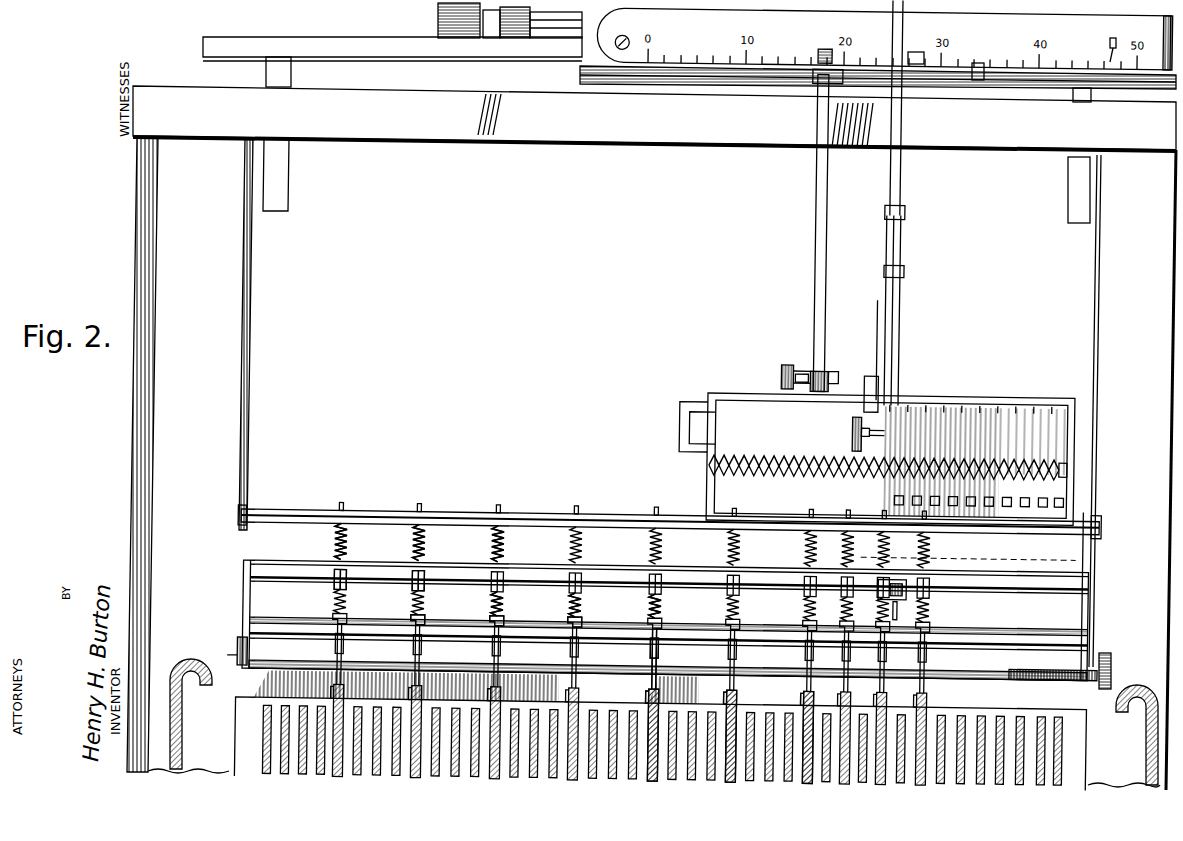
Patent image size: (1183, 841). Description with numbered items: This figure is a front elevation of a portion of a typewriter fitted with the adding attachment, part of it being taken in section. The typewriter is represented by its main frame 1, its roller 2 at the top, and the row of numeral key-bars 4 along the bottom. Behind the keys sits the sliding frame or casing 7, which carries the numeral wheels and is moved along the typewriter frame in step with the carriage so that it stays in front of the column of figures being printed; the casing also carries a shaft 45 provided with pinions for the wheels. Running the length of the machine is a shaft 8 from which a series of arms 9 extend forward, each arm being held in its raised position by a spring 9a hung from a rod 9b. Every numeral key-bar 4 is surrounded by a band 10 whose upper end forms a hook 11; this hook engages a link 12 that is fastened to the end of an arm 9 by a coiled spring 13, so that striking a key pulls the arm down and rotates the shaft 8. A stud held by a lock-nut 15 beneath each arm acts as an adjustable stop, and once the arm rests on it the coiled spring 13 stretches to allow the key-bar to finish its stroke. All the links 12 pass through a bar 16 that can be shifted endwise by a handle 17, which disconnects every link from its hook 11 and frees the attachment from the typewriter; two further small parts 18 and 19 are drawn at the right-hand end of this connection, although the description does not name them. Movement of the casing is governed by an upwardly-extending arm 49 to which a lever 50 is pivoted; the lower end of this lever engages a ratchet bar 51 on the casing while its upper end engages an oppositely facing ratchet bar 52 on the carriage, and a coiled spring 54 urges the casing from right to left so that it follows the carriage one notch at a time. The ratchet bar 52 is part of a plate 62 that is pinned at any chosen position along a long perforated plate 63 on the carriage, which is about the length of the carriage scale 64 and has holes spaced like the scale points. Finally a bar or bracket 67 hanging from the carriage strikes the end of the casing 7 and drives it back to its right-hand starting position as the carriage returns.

The main frame 1 is at (250, 373).
The roller 2 is at (580, 72).
The key-bars 4 is at (262, 742).
The frame or casing 7 is at (890, 499).
The shaft 8 is at (612, 573).
The arms 9 is at (424, 570).
The spring 9a is at (505, 545).
The rod 9b is at (543, 509).
The band 10 is at (740, 693).
The hook 11 is at (815, 684).
The link 12 is at (582, 661).
The coiled spring 13 is at (662, 603).
The lock-nut 15 is at (583, 621).
The bar 16 is at (1012, 665).
The handle 17 is at (1110, 660).
The bracket 18 is at (905, 590).
The rod 19 is at (905, 608).
The shaft 45 is at (862, 438).
The upwardly-extending arm 49 is at (902, 275).
The lever 50 is at (900, 180).
The ratchet bar 51 is at (988, 401).
The ratchet bar 52 is at (978, 80).
The coiled spring 54 is at (786, 456).
The plate 62 is at (924, 64).
The long plate 63 is at (1083, 102).
The scale 64 is at (1122, 41).
The bar or bracket 67 is at (815, 274).